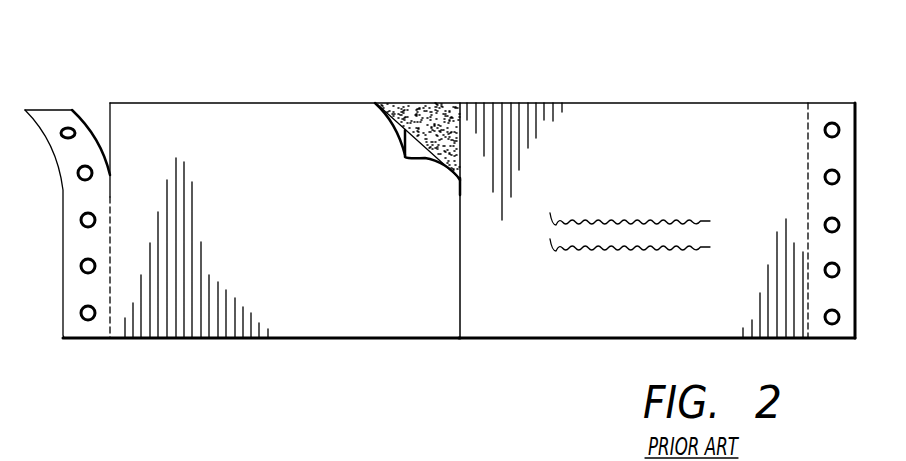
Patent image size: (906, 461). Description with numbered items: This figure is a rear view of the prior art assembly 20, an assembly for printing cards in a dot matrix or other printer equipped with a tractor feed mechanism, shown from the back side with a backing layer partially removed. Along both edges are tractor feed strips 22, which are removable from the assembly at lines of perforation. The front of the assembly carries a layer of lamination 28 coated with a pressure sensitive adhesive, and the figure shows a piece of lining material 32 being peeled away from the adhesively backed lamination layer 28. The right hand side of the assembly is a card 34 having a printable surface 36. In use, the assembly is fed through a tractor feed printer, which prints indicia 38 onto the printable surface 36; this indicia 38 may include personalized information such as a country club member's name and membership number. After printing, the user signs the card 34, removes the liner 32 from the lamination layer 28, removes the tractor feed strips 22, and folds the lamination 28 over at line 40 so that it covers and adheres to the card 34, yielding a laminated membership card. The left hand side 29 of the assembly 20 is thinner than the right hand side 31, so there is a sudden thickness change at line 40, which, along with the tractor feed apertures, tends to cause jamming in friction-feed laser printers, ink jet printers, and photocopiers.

The prior art assembly 20 is at (447, 70).
The tractor feed strips 22 is at (49, 119).
The lamination layer 28 is at (422, 112).
The left hand side 29 is at (550, 327).
The right hand side 31 is at (333, 327).
The lining material 32 is at (263, 127).
The card 34 is at (598, 90).
The printable surface 36 is at (683, 123).
The indicia 38 is at (726, 200).
The fold line 40 is at (459, 327).